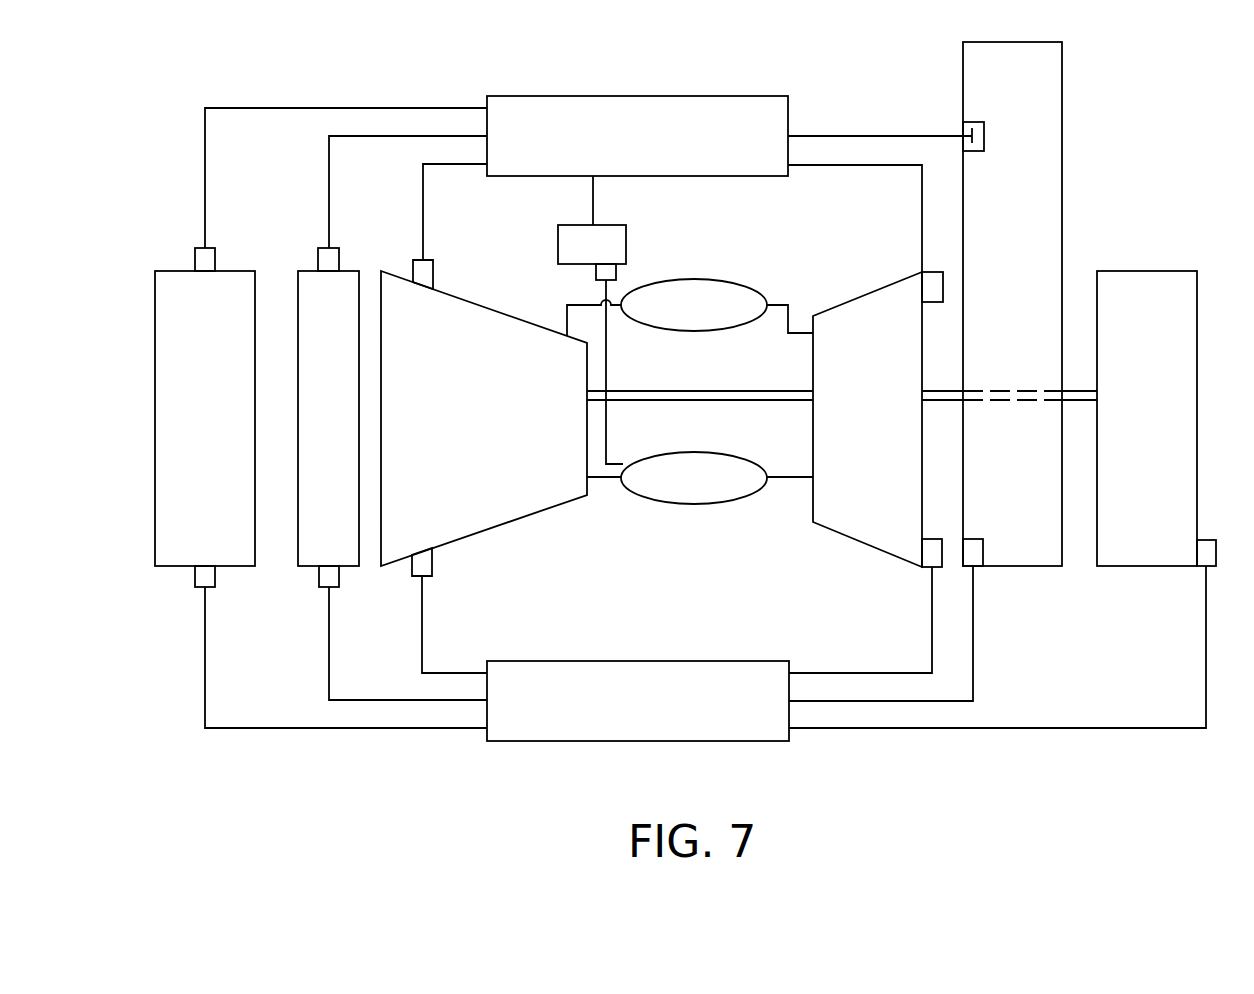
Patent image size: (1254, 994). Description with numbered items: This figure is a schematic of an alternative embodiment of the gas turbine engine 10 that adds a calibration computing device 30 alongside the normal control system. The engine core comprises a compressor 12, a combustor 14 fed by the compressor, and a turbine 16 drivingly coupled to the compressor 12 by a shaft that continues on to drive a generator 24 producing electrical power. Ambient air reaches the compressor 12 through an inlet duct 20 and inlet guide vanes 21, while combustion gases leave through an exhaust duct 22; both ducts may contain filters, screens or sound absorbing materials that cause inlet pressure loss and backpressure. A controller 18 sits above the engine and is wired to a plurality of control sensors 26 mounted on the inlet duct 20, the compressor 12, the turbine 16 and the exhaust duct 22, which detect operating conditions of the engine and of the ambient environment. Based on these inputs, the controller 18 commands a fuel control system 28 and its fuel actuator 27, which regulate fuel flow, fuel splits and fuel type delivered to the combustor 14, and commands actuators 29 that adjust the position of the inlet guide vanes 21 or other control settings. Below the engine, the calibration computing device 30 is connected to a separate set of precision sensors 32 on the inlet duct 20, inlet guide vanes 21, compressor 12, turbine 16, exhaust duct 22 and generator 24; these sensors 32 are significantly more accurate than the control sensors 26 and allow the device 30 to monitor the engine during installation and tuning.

The gas turbine engine 10 is at (628, 580).
The compressor 12 is at (497, 527).
The combustor 14 is at (715, 279).
The turbine 16 is at (868, 547).
The controller 18 is at (695, 93).
The inlet duct 20 is at (183, 567).
The inlet guide vanes 21 is at (308, 567).
The exhaust duct 22 is at (1043, 567).
The generator 24 is at (1147, 567).
The control sensors 26 is at (210, 248).
The fuel actuator 27 is at (596, 272).
The fuel control system 28 is at (558, 246).
The actuators 29 is at (333, 248).
The calibration computing device 30 is at (712, 660).
The precision sensors 32 is at (210, 588).